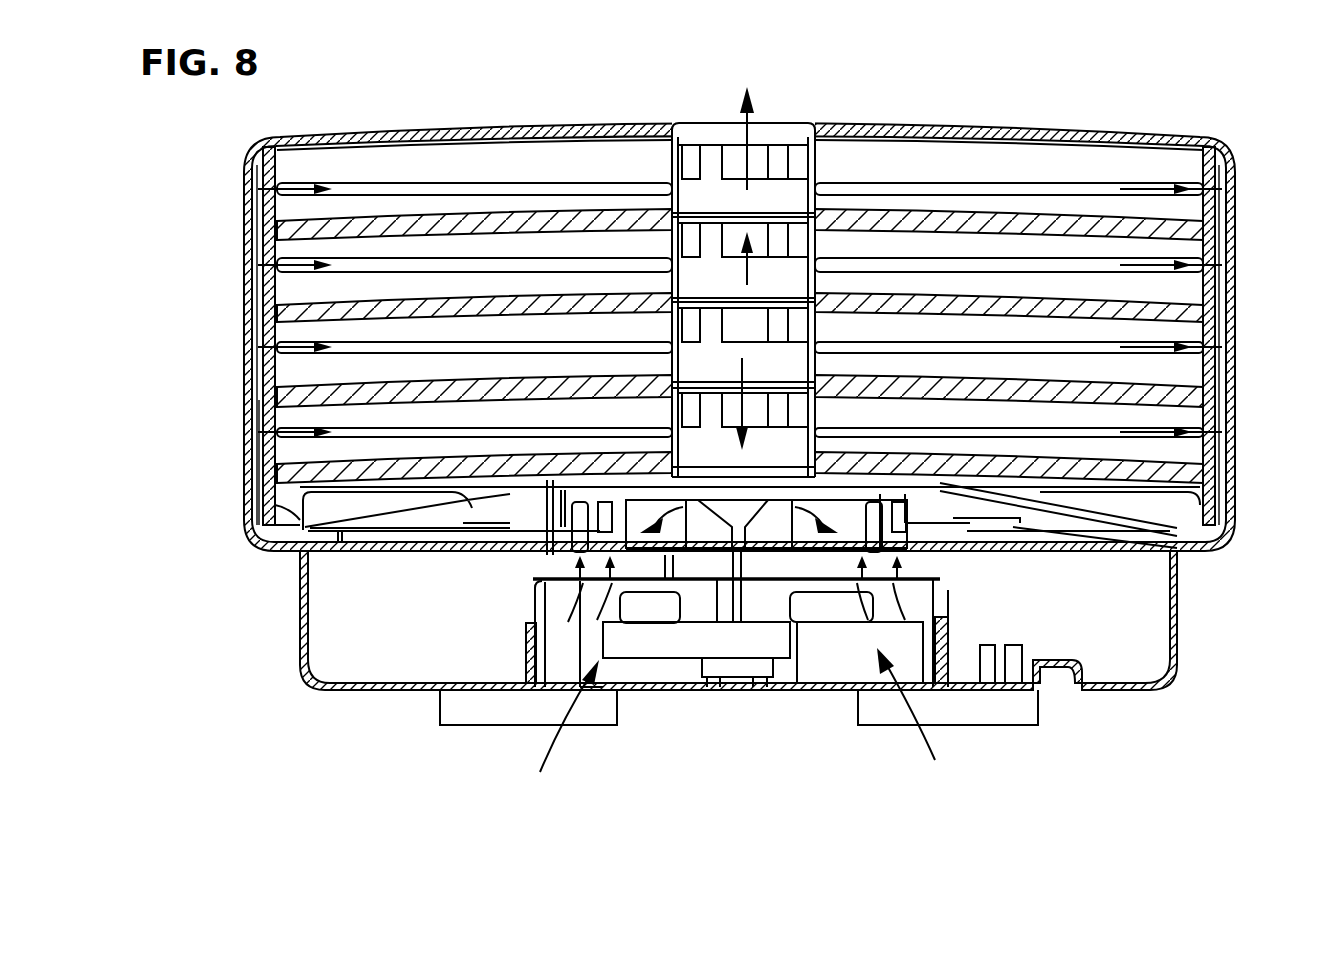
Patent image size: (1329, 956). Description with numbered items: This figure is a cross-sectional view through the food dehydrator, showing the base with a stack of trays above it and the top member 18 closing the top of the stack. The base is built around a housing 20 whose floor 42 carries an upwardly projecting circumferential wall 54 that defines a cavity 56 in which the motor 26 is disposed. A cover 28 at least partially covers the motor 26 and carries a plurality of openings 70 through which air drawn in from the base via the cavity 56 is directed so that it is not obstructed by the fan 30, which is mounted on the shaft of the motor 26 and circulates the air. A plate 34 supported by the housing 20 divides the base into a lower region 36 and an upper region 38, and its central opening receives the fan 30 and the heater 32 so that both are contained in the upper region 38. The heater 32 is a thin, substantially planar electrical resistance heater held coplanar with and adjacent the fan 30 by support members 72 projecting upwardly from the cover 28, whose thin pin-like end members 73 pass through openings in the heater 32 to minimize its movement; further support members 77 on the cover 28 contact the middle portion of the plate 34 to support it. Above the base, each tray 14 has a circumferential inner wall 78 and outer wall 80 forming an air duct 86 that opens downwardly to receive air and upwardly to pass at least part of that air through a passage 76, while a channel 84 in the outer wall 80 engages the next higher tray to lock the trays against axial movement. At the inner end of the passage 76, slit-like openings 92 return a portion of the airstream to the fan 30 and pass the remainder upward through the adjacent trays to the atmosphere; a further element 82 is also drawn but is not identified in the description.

The tray 14 is at (1240, 220).
The top member 18 is at (1140, 131).
The housing 20 is at (252, 738).
The motor 26 is at (753, 680).
The cover 28 is at (545, 590).
The fan 30 is at (897, 532).
The heater 32 is at (1030, 512).
The plate 34 is at (415, 553).
The lower region 36 is at (1093, 625).
The upper region 38 is at (1127, 528).
The floor 42 is at (366, 688).
The circumferential wall 54 is at (525, 656).
The cavity 56 is at (852, 660).
The openings 70 is at (540, 603).
The support members 72 is at (618, 580).
The pin-like end members 73 is at (662, 500).
The passage 76 is at (284, 275).
The support members 77 is at (552, 567).
The inner wall 78 is at (280, 463).
The outer wall 80 is at (262, 468).
The wall gap 82 is at (262, 455).
The channel 84 is at (262, 437).
The air duct 86 is at (270, 498).
The slit-like openings 92 is at (758, 336).